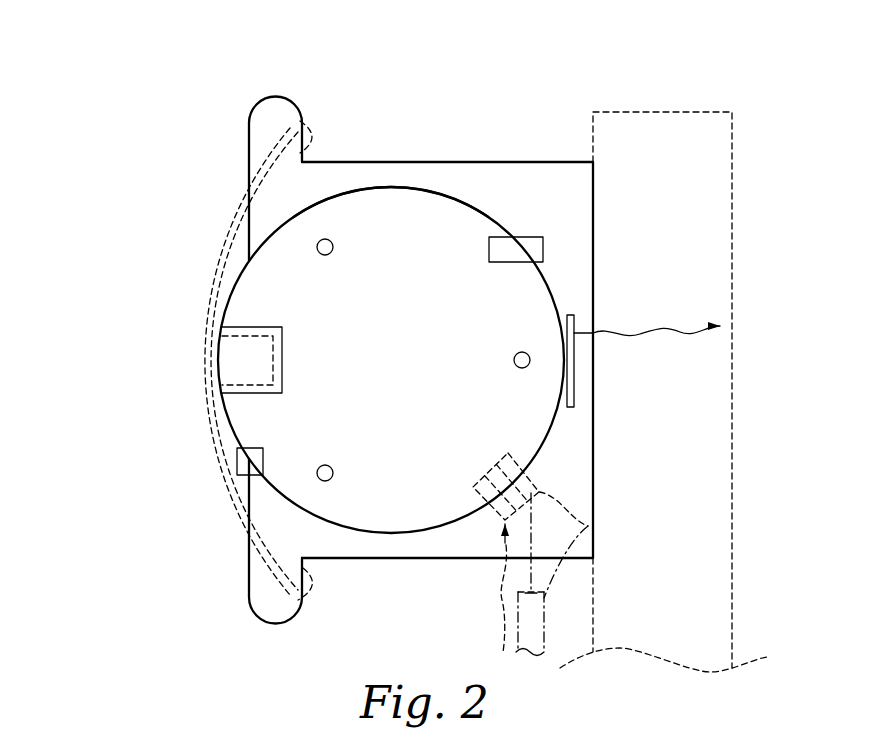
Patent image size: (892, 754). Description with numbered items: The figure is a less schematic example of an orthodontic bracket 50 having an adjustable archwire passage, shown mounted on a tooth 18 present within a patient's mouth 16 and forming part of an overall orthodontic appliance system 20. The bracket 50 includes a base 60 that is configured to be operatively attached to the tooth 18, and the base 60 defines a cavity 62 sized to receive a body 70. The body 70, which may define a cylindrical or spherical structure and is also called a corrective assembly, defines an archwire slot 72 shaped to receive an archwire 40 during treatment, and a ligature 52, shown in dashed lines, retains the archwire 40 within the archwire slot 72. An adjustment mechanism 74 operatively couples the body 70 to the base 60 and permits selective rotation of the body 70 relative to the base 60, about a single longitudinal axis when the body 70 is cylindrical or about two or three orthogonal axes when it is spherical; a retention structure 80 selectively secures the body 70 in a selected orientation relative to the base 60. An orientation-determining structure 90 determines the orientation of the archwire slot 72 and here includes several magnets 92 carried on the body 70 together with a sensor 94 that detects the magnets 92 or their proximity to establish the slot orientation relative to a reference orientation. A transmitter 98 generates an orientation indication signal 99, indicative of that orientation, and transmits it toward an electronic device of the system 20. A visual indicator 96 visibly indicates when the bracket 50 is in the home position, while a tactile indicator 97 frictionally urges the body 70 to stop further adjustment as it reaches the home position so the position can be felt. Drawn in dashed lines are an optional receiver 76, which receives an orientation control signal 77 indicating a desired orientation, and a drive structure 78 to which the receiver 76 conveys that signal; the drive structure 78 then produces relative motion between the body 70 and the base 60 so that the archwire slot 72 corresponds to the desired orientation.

The patient's mouth 16 is at (122, 40).
The orthodontic appliance system 20 is at (133, 95).
The orthodontic bracket 50 is at (210, 133).
The ligature 52 is at (243, 503).
The base 60 is at (553, 158).
The cavity 62 is at (404, 226).
The body 70 is at (238, 272).
The archwire slot 72 is at (247, 347).
The archwire 40 is at (241, 364).
The adjustment mechanism 74 is at (356, 187).
The receiver 76 is at (483, 525).
The orientation control signal 77 is at (510, 600).
The drive structure 78 is at (588, 526).
The retention structure 80 is at (533, 237).
The orientation-determining structure 90 is at (611, 377).
The magnets 92 is at (325, 256).
The sensor 94 is at (574, 397).
The visual indicator 96 is at (237, 462).
The tactile indicator 97 is at (357, 533).
The transmitter 98 is at (575, 328).
The orientation indication signal 99 is at (690, 326).
The tooth 18 is at (732, 458).